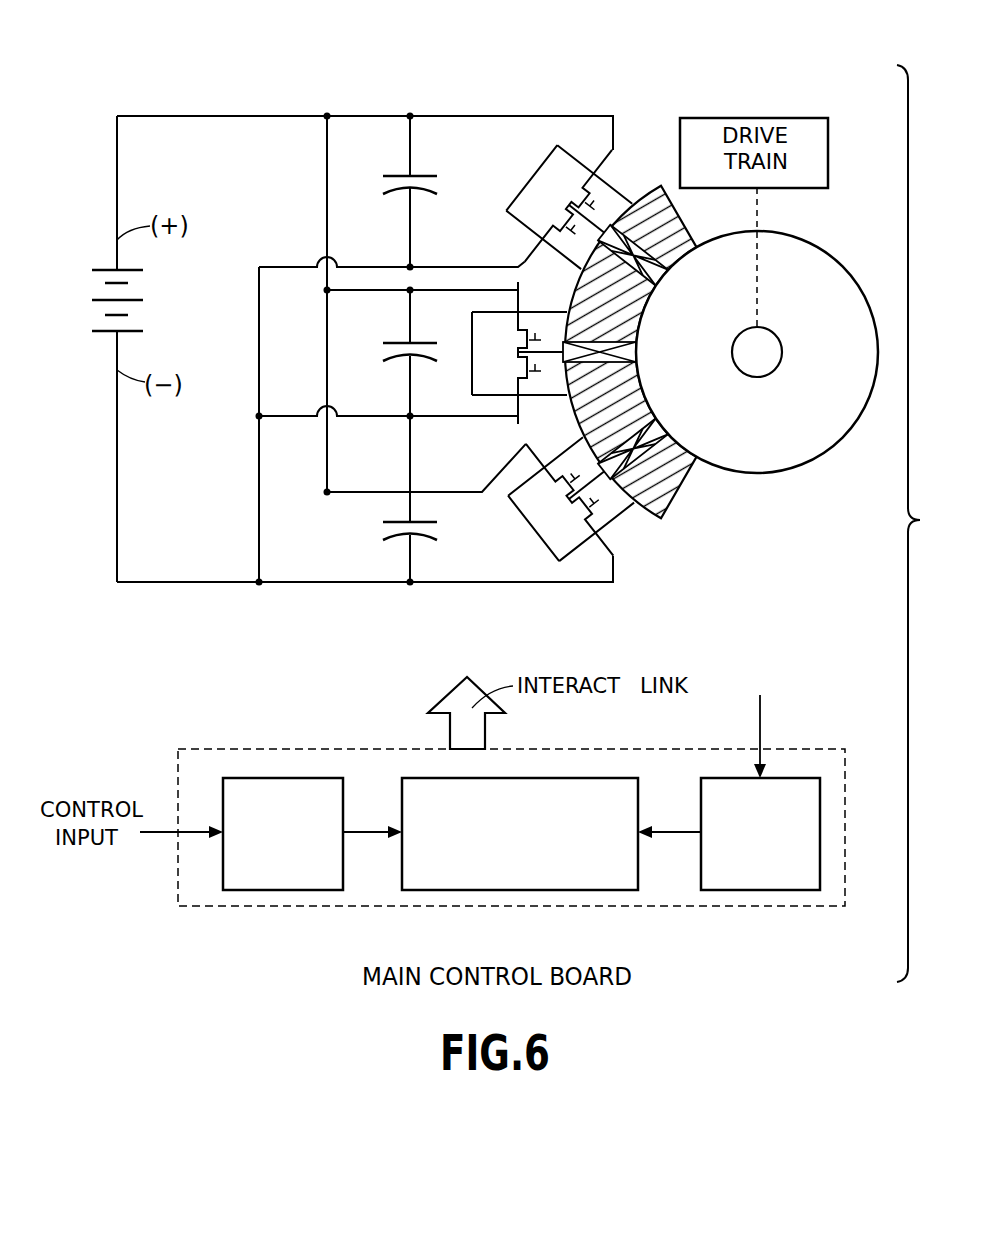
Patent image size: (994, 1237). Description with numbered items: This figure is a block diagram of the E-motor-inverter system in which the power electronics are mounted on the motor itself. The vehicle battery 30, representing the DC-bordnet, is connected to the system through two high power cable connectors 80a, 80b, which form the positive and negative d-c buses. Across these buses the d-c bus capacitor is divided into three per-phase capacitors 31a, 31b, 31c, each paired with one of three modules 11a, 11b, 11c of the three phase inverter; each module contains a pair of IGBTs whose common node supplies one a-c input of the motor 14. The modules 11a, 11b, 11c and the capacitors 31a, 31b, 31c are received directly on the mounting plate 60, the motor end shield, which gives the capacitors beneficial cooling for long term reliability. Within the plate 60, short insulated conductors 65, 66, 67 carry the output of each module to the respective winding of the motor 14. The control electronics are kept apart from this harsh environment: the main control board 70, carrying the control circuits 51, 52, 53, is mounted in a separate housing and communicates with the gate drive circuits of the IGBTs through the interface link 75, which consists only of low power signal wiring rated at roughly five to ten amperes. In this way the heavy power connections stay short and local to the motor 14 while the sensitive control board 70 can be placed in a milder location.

The high power cable connector 80a is at (215, 116).
The high power cable connector 80b is at (192, 581).
The vehicle battery 30 is at (98, 314).
The capacitor 31a is at (433, 184).
The capacitor 31b is at (387, 352).
The capacitor 31c is at (385, 530).
The module 11a is at (547, 188).
The module 11b is at (487, 333).
The module 11c is at (546, 528).
The mounting plate 60 is at (683, 495).
The short insulated conductor 65 is at (658, 207).
The short insulated conductor 66 is at (636, 344).
The short insulated conductor 67 is at (657, 433).
The motor 14 is at (833, 277).
The main control board 70 is at (198, 905).
The control circuit 51 is at (468, 890).
The control circuit 52 is at (262, 890).
The control circuit 53 is at (738, 890).
The interface link 75 is at (458, 742).